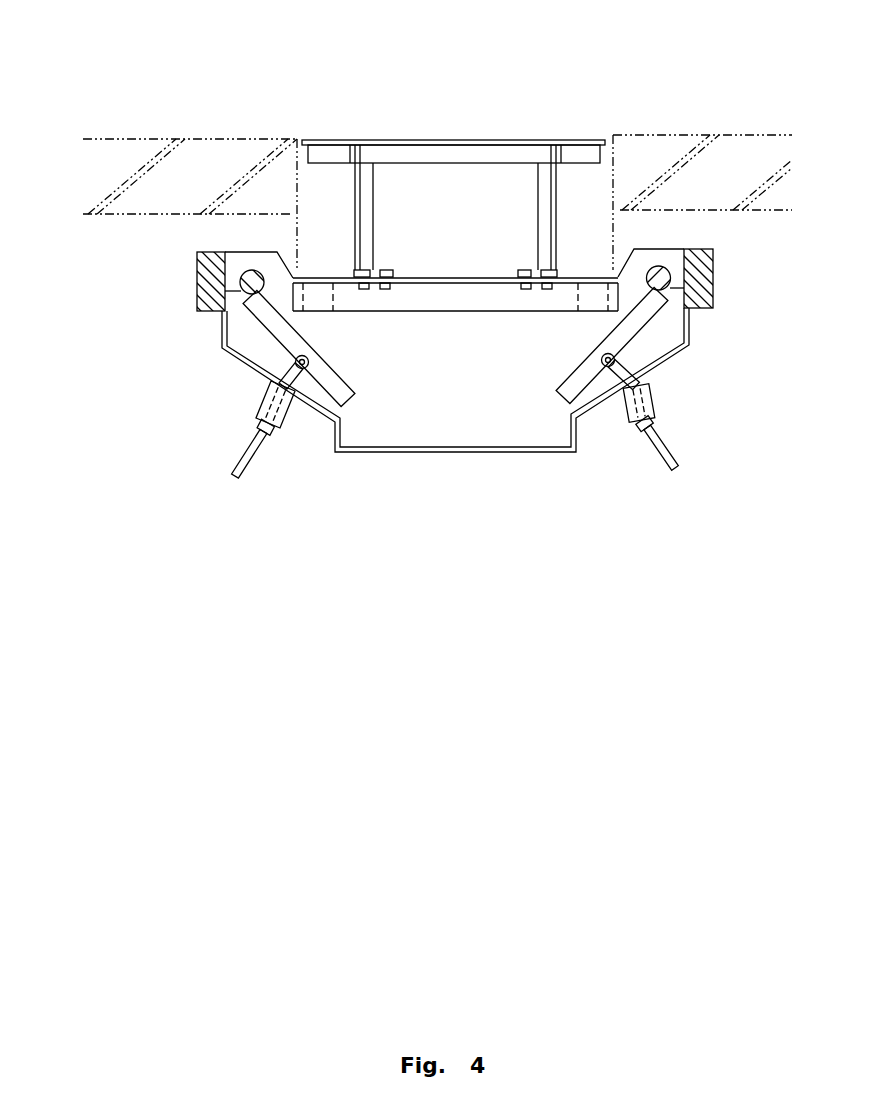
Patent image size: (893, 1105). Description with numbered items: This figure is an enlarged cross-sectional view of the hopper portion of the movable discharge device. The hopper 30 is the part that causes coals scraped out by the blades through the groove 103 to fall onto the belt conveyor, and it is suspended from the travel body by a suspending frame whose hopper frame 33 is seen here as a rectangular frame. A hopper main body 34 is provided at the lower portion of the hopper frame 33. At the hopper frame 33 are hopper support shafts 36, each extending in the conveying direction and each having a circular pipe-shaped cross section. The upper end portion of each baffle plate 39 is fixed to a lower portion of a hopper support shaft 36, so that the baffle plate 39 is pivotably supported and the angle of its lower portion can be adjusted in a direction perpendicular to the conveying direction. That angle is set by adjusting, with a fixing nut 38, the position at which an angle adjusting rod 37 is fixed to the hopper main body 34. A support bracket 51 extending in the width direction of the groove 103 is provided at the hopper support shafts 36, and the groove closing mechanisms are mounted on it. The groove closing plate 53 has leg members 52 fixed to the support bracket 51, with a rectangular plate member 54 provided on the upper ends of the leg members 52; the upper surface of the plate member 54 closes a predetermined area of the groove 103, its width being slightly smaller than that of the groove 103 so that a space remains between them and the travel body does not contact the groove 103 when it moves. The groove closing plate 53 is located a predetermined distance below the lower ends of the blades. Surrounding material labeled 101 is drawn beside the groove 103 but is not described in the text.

The hopper 30 is at (155, 377).
The hopper frame 33 is at (197, 290).
The hopper main body 34 is at (598, 407).
The hopper support shaft 36 is at (250, 270).
The angle adjusting rod 37 is at (250, 460).
The fixing nut 38 is at (255, 422).
The baffle plate 39 is at (270, 330).
The support bracket 51 is at (452, 302).
The leg member 52 is at (538, 222).
The groove closing plate 53 is at (453, 147).
The plate member 54 is at (405, 140).
The left panel 101 is at (198, 138).
The groove 103 is at (613, 210).